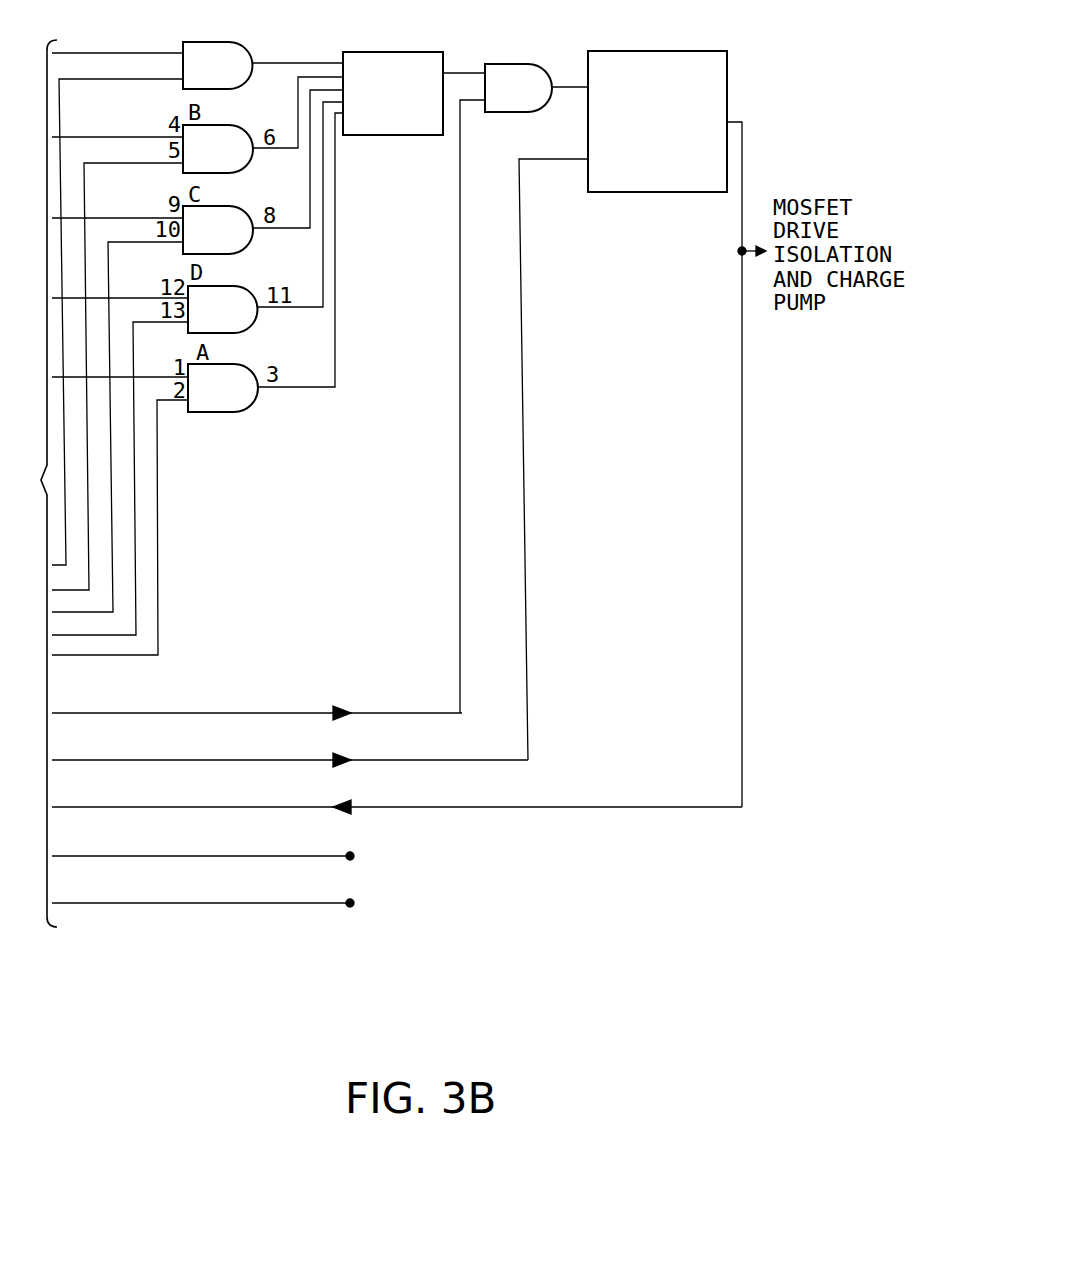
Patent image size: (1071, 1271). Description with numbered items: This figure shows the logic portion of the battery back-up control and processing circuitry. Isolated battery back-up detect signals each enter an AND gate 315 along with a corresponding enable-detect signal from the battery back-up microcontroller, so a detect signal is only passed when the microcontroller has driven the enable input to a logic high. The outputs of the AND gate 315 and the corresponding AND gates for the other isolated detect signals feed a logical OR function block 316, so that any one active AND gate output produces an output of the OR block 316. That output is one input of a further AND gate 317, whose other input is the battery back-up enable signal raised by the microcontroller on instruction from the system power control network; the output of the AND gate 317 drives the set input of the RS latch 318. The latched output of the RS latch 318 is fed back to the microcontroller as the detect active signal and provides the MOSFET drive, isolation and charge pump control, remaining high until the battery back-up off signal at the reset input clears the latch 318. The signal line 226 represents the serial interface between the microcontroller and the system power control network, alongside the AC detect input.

The AND gate 315 is at (212, 42).
The logical OR function block 316 is at (370, 52).
The AND gate 317 is at (512, 64).
The RS latch 318 is at (658, 51).
The signal line 226 is at (180, 904).